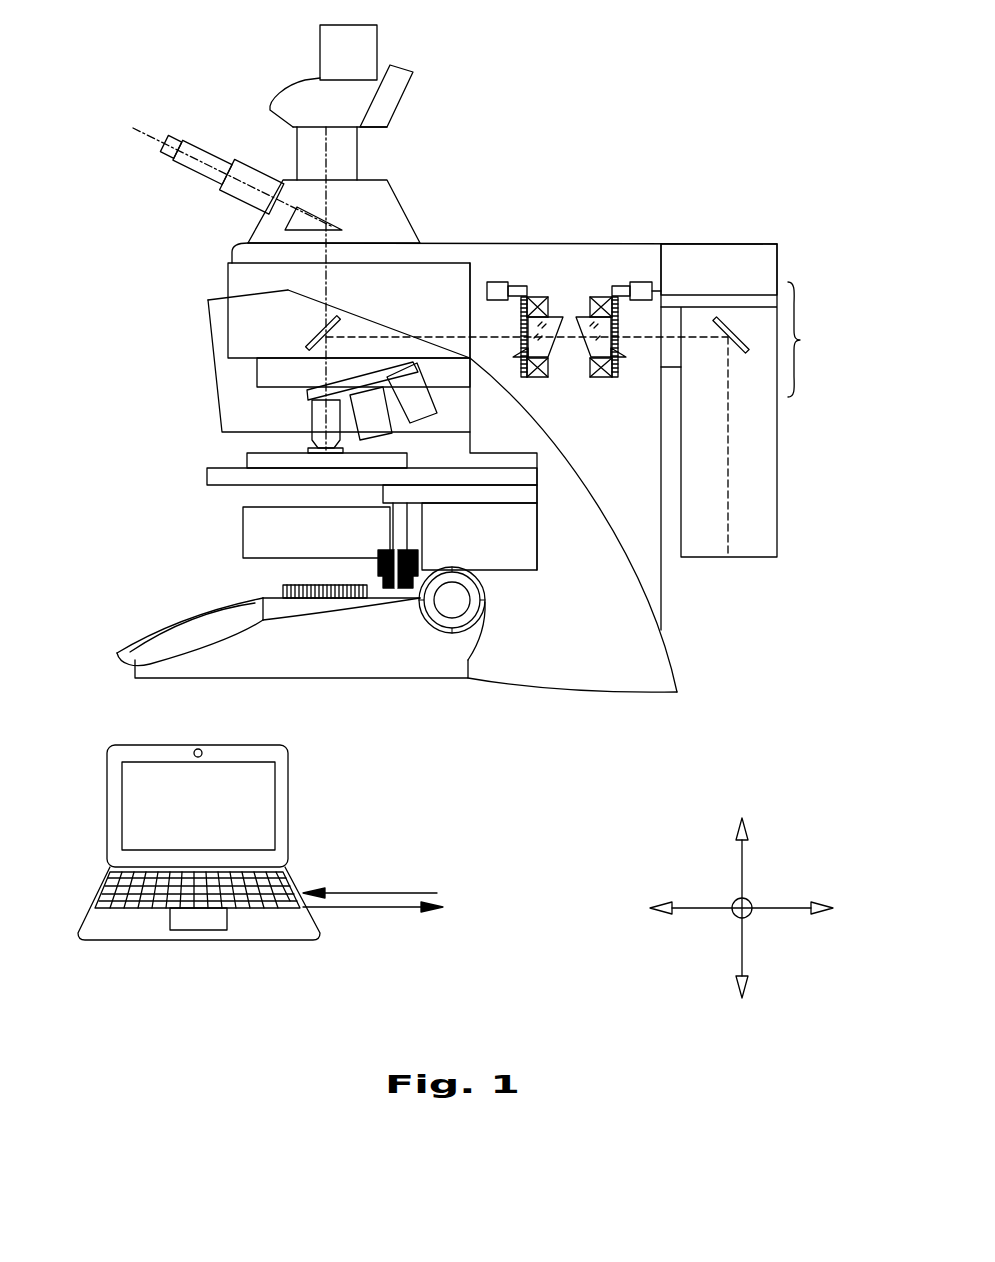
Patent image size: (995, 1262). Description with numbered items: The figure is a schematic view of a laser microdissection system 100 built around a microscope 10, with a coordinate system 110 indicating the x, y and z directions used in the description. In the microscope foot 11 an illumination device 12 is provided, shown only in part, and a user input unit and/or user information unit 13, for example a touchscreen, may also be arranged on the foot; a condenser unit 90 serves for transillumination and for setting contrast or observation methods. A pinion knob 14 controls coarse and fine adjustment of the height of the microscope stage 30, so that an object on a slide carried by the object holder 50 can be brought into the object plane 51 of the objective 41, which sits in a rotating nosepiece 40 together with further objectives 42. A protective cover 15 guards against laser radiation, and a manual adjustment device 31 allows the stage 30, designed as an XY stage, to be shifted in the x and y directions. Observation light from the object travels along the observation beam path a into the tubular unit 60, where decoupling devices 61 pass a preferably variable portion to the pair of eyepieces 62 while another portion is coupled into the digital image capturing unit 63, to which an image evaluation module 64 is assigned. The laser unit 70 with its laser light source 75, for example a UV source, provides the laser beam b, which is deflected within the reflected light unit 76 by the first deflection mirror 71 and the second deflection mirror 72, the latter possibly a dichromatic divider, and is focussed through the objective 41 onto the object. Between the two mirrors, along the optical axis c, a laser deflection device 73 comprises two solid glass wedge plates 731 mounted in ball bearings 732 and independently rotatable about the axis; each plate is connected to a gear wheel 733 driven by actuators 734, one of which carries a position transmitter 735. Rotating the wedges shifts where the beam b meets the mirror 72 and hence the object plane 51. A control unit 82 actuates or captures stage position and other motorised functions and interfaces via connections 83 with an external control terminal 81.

The laser microdissection system 100 is at (528, 157).
The microscope 10 is at (662, 668).
The microscope foot 11 is at (353, 655).
The illumination device 12 is at (283, 592).
The user input unit and/or user information unit 13 is at (150, 648).
The pinion knob 14 is at (510, 570).
The protective cover 15 is at (220, 367).
The microscope stage 30 is at (207, 475).
The manual adjustment device 31 is at (395, 518).
The rotating nosepiece 40 is at (300, 400).
The objective 41 is at (317, 422).
The further objectives 42 is at (423, 420).
The object holder 50 is at (228, 452).
The object plane 51 is at (322, 453).
The tubular unit 60 is at (247, 243).
The decoupling devices 61 is at (333, 223).
The pair of eyepieces 62 is at (192, 147).
The digital image capturing unit 63 is at (398, 97).
The image evaluation module 64 is at (372, 43).
The laser unit 70 is at (763, 560).
The first deflection mirror 71 is at (743, 340).
The second deflection mirror 72 is at (310, 335).
The laser deflection device 73 is at (553, 316).
The solid glass wedge plates 731 is at (573, 357).
The ball bearings 732 is at (590, 305).
The gear wheel 733 is at (523, 327).
The actuators 734 is at (513, 283).
The position transmitters 735 is at (661, 293).
The laser light source 75 is at (710, 528).
The reflected light unit 76 is at (812, 339).
The control terminal 81 is at (325, 841).
The control unit 82 is at (753, 253).
The connections 83 is at (390, 893).
The condenser unit 90 is at (243, 522).
The coordinate system 110 is at (642, 849).
The observation beam path a is at (330, 280).
The laser beam b is at (728, 407).
The optical axis c is at (423, 338).